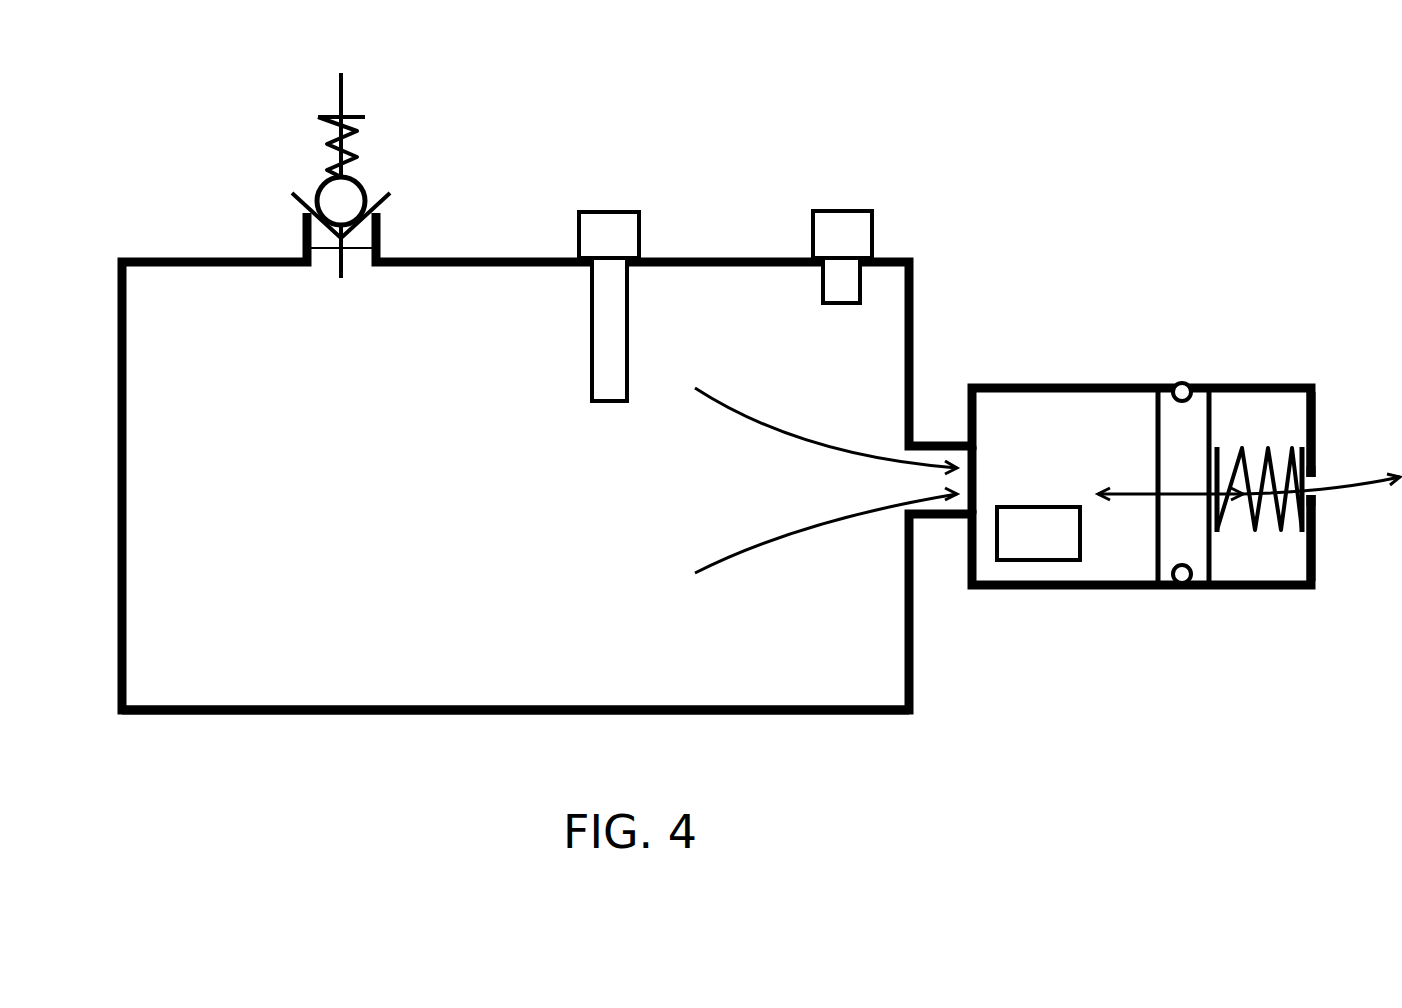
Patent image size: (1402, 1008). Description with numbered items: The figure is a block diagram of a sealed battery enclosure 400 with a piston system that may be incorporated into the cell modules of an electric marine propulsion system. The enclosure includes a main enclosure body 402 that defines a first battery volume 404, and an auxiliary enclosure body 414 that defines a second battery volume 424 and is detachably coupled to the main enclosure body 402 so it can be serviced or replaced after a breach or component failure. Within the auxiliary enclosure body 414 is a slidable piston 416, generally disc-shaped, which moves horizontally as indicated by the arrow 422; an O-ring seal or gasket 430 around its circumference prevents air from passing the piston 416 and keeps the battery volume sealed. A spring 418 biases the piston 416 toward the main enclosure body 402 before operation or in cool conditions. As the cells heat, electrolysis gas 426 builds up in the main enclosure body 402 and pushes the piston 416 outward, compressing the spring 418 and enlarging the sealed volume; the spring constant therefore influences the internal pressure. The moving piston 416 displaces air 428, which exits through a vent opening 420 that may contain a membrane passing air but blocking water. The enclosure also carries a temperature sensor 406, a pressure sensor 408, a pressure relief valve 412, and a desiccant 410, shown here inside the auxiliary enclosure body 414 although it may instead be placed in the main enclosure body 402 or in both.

The sealed battery enclosure 400 is at (140, 150).
The main enclosure body 402 is at (458, 258).
The first battery volume 404 is at (363, 682).
The temperature sensor 406 is at (638, 235).
The pressure sensor 408 is at (875, 240).
The desiccant 410 is at (1045, 504).
The pressure relief valve 412 is at (320, 188).
The auxiliary enclosure body 414 is at (1078, 385).
The slidable piston 416 is at (1220, 417).
The spring 418 is at (1250, 530).
The vent opening 420 is at (1325, 477).
The arrow 422 is at (1127, 496).
The second battery volume 424 is at (1040, 412).
The electrolysis gas 426 is at (750, 427).
The air 428 is at (1340, 490).
The O-ring seal or gasket 430 is at (1192, 582).